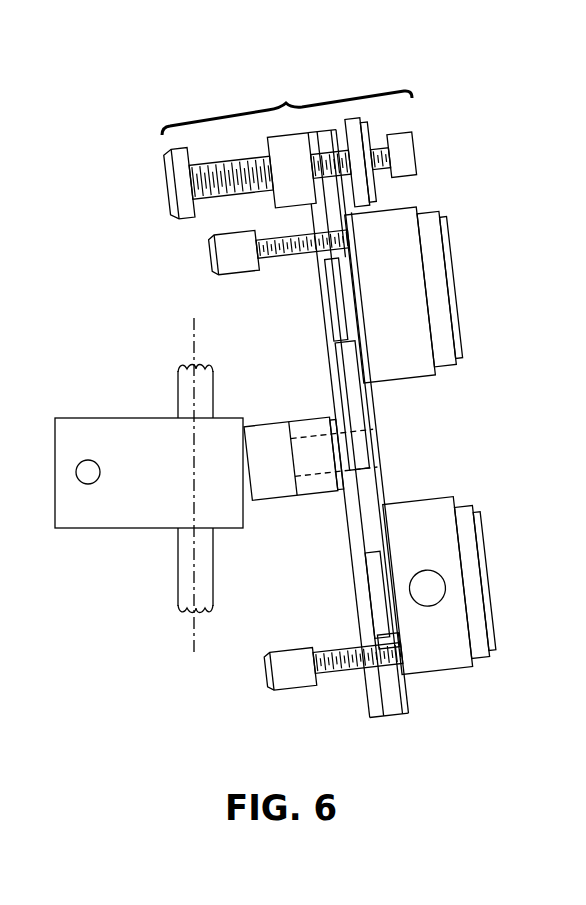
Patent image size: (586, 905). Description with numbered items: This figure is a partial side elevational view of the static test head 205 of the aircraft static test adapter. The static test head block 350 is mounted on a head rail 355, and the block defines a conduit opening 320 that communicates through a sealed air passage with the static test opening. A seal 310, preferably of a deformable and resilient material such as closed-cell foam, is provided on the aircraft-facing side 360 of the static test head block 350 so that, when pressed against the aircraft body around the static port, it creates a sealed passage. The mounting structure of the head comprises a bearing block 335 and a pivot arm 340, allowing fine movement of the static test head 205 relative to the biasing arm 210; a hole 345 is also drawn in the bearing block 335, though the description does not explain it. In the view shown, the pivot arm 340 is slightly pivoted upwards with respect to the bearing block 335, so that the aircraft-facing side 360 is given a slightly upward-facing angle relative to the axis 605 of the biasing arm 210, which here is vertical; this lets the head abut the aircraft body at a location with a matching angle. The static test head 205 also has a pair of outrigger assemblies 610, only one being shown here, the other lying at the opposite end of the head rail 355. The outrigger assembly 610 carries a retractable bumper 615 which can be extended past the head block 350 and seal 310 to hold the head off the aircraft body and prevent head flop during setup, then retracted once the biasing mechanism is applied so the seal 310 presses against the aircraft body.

The static test head 205 is at (319, 384).
The biasing arm 210 is at (214, 559).
The seal 310 is at (437, 235).
The conduit opening 320 is at (432, 586).
The bearing block 335 is at (149, 478).
The pivot arm 340 is at (272, 487).
The hole 345 is at (84, 459).
The static test head block 350 is at (449, 440).
The head rail 355 is at (373, 405).
The aircraft-facing side 360 is at (449, 440).
The axis of the biasing arm 605 is at (198, 334).
The outrigger assembly 610 is at (287, 154).
The retractable bumper 615 is at (419, 150).